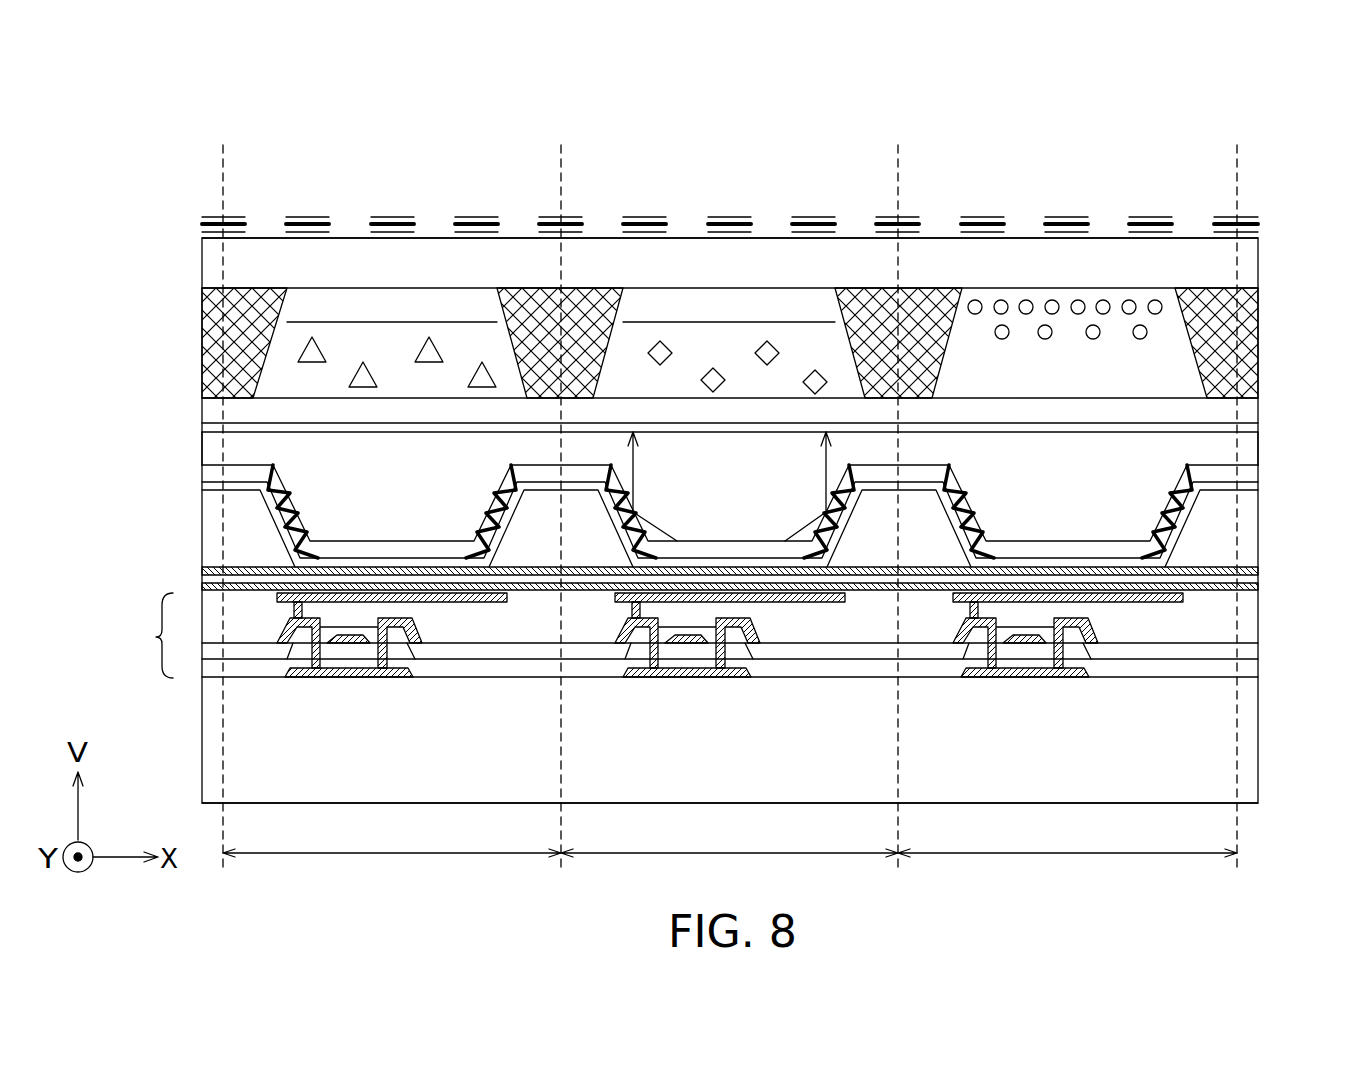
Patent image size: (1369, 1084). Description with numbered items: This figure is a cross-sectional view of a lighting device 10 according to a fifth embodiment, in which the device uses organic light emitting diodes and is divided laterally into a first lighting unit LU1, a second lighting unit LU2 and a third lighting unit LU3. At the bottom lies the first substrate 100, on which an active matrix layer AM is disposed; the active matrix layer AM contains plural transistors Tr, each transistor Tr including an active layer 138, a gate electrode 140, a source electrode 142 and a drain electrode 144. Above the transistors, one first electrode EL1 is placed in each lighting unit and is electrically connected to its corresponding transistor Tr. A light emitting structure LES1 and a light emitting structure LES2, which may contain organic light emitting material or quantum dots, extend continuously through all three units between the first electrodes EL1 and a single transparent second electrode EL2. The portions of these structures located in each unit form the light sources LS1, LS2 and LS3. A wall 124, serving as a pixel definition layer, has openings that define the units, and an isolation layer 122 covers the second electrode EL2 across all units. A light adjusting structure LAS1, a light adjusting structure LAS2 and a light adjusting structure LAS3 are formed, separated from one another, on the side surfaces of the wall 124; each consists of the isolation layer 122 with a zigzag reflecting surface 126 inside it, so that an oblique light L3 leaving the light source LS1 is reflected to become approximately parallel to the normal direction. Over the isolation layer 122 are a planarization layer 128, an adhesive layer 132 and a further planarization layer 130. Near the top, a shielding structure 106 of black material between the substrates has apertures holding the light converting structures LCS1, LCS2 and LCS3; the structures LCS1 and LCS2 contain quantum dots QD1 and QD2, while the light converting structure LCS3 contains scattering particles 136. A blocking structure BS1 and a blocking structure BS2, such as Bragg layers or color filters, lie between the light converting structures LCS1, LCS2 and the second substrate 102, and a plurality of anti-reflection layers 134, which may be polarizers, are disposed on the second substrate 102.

The lighting device 10 is at (1200, 133).
The first substrate 100 is at (1252, 745).
The second substrate 102 is at (210, 262).
The shielding structure 106 is at (210, 343).
The isolation layer 122 is at (1247, 472).
The wall 124 is at (1252, 527).
The reflecting surface 126 is at (818, 502).
The planarization layer 128 is at (210, 452).
The planarization layer 130 is at (210, 412).
The adhesive layer 132 is at (210, 428).
The anti-reflection layers 134 is at (648, 217).
The scattering particles 136 is at (1157, 300).
The active layer 138 is at (384, 678).
The gate electrode 140 is at (352, 645).
The source electrode 142 is at (421, 631).
The drain electrode 144 is at (297, 678).
The light adjusting structure LAS1 is at (596, 452).
The light adjusting structure LAS2 is at (258, 452).
The light adjusting structure LAS3 is at (934, 452).
The light converting structure LCS1 is at (700, 322).
The light converting structure LCS2 is at (362, 322).
The light converting structure LCS3 is at (1092, 288).
The first quantum dots QD1 is at (768, 345).
The second quantum dots QD2 is at (428, 348).
The blocking structure BS1 is at (812, 300).
The blocking structure BS2 is at (475, 300).
The first electrodes EL1 is at (1183, 597).
The second electrode EL2 is at (1252, 487).
The light emitting structure LES1 is at (1253, 588).
The light emitting structure LES2 is at (1253, 570).
The light source LS1 is at (601, 607).
The light source LS2 is at (263, 607).
The light source LS3 is at (939, 607).
The first lighting unit LU1 is at (729, 840).
The second lighting unit LU2 is at (392, 840).
The third lighting unit LU3 is at (1067, 840).
The oblique light L3 is at (650, 516).
The transistor Tr is at (317, 703).
The active matrix layer AM is at (140, 635).